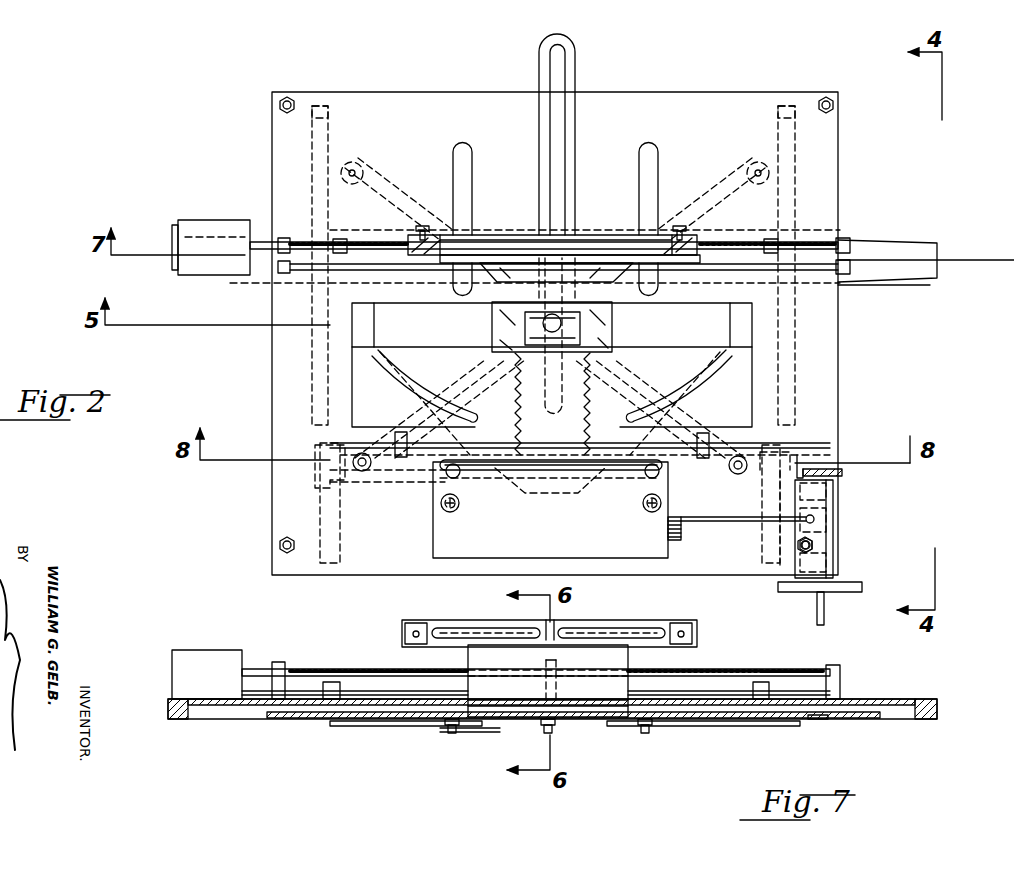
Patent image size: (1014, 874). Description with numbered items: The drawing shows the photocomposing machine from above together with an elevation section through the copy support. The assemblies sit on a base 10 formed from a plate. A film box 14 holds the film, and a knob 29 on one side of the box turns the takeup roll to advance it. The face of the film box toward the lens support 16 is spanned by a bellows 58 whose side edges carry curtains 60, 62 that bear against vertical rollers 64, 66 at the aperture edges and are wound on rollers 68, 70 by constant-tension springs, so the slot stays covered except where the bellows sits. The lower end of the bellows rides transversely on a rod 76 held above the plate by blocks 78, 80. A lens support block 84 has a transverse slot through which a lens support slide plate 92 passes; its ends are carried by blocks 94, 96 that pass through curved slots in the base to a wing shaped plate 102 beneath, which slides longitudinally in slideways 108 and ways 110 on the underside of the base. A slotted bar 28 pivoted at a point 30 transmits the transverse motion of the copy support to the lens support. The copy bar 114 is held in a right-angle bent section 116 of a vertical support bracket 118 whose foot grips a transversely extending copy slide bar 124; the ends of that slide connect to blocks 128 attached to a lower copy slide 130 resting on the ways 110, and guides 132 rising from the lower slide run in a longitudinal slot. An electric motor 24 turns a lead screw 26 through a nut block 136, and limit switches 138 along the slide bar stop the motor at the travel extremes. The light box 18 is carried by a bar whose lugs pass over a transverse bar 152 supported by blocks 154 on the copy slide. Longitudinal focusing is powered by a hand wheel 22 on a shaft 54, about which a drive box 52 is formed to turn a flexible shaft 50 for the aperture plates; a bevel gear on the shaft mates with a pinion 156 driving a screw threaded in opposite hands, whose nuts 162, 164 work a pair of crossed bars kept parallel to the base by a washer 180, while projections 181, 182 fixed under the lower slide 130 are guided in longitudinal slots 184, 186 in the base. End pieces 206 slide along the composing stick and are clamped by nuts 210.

In FIG. 7, the base 10 is at (820, 719).
In FIG. 2, the film box 14 is at (495, 565).
In FIG. 2, the lens support 16 is at (527, 322).
In FIG. 2, the light box 18 is at (608, 284).
In FIG. 2, the hand wheel 22 is at (826, 620).
In FIG. 2, the electric motor 24 is at (220, 225).
In FIG. 7, the electric motor 24 is at (215, 652).
In FIG. 2, the lead screw 26 is at (742, 244).
In FIG. 7, the lead screw 26 is at (730, 670).
In FIG. 2, the slotted bar 28 is at (572, 108).
In FIG. 2, the knob 29 is at (683, 530).
In FIG. 2, the pivot point 30 is at (552, 493).
In FIG. 2, the flexible shaft 50 is at (732, 517).
In FIG. 2, the drive box 52 is at (828, 518).
In FIG. 2, the shaft 54 is at (815, 547).
In FIG. 2, the bellows 58 is at (590, 404).
In FIG. 2, the curtain 60 is at (490, 458).
In FIG. 2, the curtain 62 is at (612, 458).
In FIG. 2, the vertical roller 64 is at (460, 476).
In FIG. 2, the vertical roller 66 is at (646, 476).
In FIG. 2, the roller 68 is at (456, 512).
In FIG. 2, the roller 70 is at (652, 513).
In FIG. 2, the rod 76 is at (440, 462).
In FIG. 2, the block 78 is at (400, 432).
In FIG. 2, the block 80 is at (705, 433).
In FIG. 2, the lens support block 84 is at (614, 326).
In FIG. 2, the lens support slide plate 92 is at (432, 306).
In FIG. 2, the block 94 is at (362, 346).
In FIG. 2, the block 96 is at (742, 348).
In FIG. 2, the wing shaped plate 102 is at (640, 356).
In FIG. 2, the slideways 108 is at (340, 555).
In FIG. 2, the ways 110 is at (318, 128).
In FIG. 7, the ways 110 is at (340, 727).
In FIG. 2, the copy bar 114 is at (518, 240).
In FIG. 7, the copy bar 114 is at (452, 620).
In FIG. 2, the right-angle bent section 116 is at (443, 262).
In FIG. 7, the support bracket 118 is at (468, 660).
In FIG. 2, the copy slide bar 124 is at (872, 250).
In FIG. 7, the copy slide bar 124 is at (678, 698).
In FIG. 7, the blocks 128 is at (170, 707).
In FIG. 2, the lower copy slide 130 is at (878, 284).
In FIG. 7, the lower copy slide 130 is at (262, 720).
In FIG. 2, the guides 132 is at (548, 95).
In FIG. 7, the guides 132 is at (552, 734).
In FIG. 7, the nut block 136 is at (557, 666).
In FIG. 2, the limit switches 138 is at (341, 239).
In FIG. 7, the limit switches 138 is at (336, 689).
In FIG. 2, the transverse bar 152 is at (316, 278).
In FIG. 2, the blocks 154 is at (281, 266).
In FIG. 2, the pinion 156 is at (810, 455).
In FIG. 2, the nut 162 is at (795, 455).
In FIG. 2, the nut 164 is at (345, 476).
In FIG. 7, the washer 180 is at (452, 734).
In FIG. 7, the projection 181 is at (440, 733).
In FIG. 7, the projection 182 is at (648, 734).
In FIG. 2, the longitudinal slot 184 is at (660, 165).
In FIG. 2, the longitudinal slot 186 is at (472, 165).
In FIG. 7, the end pieces 206 is at (405, 628).
In FIG. 2, the nuts 210 is at (423, 226).